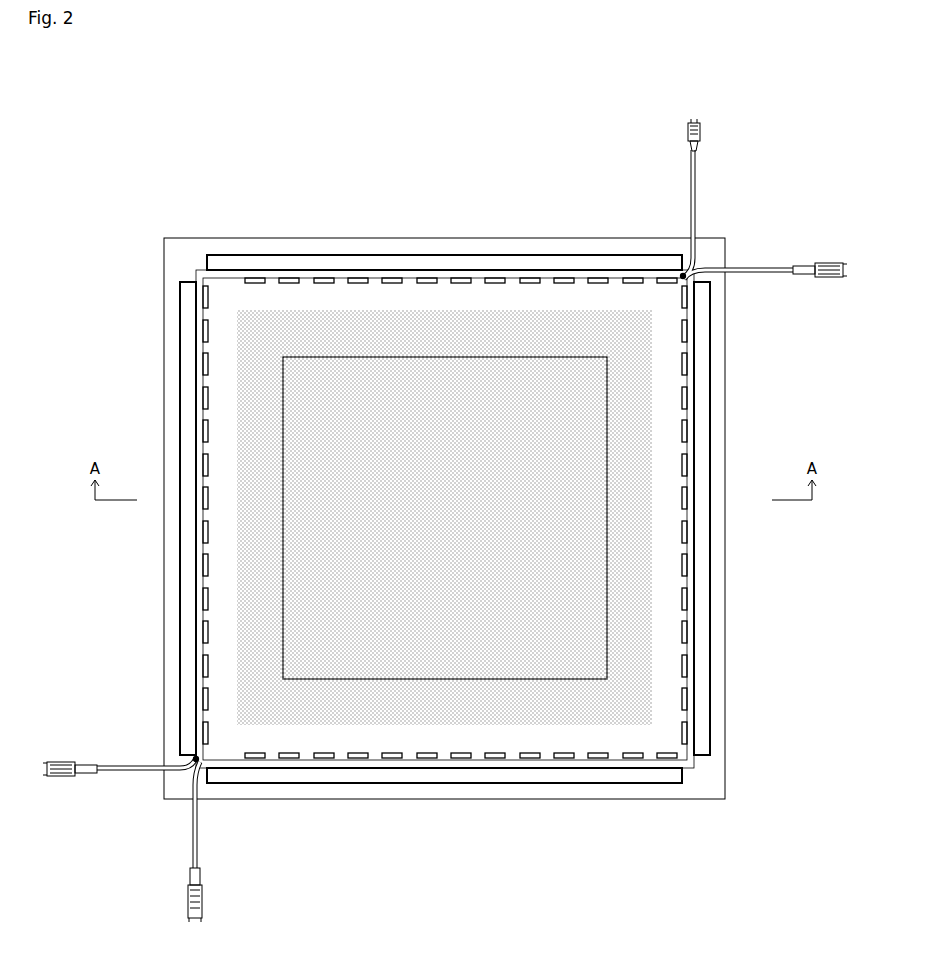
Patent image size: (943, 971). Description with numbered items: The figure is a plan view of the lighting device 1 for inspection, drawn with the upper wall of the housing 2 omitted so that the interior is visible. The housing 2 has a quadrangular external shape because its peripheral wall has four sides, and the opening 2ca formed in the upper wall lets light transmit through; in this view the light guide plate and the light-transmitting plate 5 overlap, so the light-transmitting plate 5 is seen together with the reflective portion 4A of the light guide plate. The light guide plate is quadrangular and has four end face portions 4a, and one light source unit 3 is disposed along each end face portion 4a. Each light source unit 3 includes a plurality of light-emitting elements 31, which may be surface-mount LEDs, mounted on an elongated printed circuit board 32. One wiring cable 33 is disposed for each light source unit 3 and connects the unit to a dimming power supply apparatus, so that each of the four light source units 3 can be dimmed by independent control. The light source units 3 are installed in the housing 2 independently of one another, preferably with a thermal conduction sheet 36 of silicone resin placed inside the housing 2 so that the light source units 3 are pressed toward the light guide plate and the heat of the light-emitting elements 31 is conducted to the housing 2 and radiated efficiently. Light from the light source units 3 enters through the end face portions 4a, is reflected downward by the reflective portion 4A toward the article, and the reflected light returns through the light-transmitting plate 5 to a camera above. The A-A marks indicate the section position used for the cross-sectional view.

The lighting device for inspection 1 is at (325, 168).
The housing 2 is at (728, 690).
The opening 2ca is at (287, 432).
The light source unit 3 is at (570, 170).
The light-emitting element 31 is at (525, 275).
The printed circuit board 32 is at (577, 280).
The wiring cable 33 is at (698, 215).
The thermal conduction sheet 36 is at (387, 262).
The reflective portion 4A is at (242, 312).
The end face portion 4a is at (443, 280).
The light-transmitting plate 5 is at (664, 310).